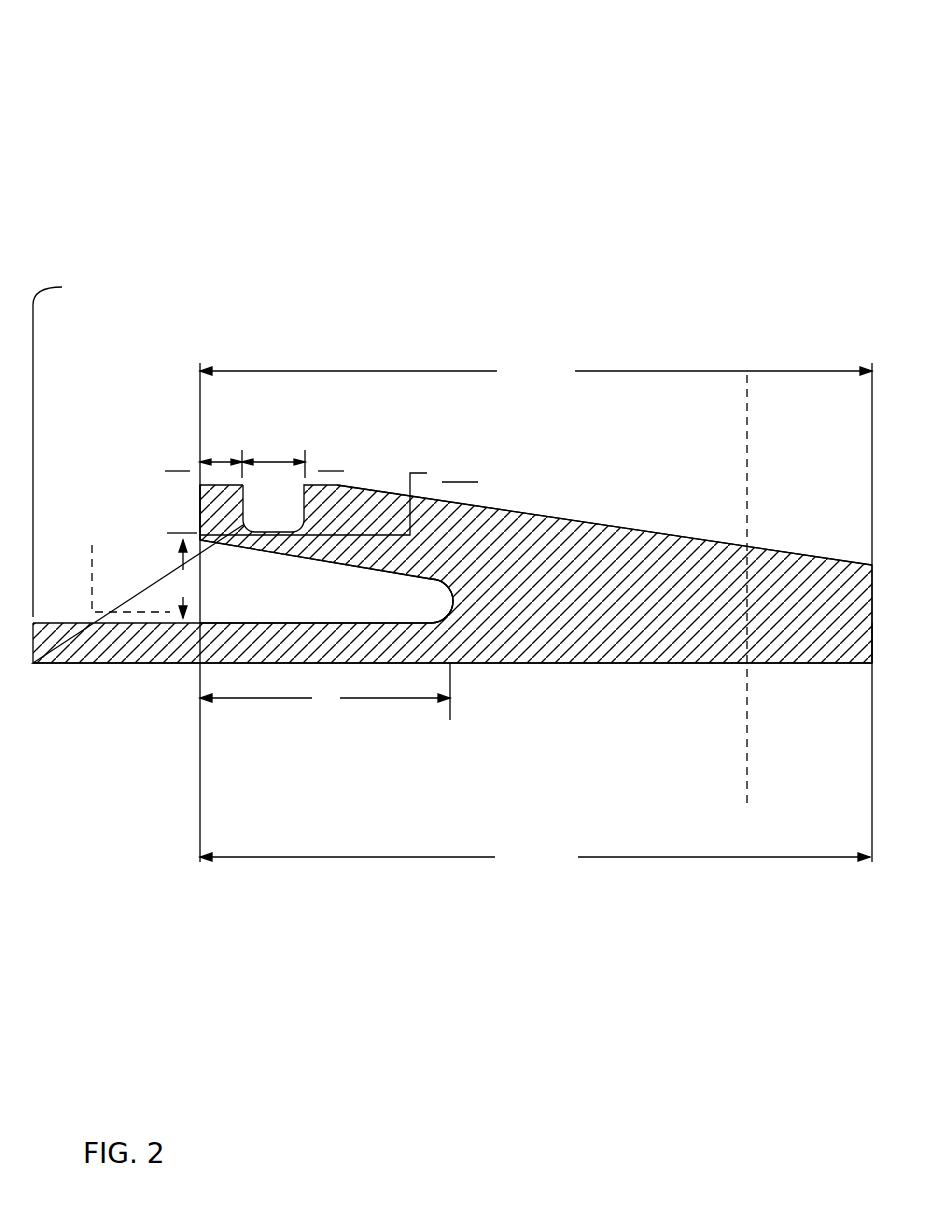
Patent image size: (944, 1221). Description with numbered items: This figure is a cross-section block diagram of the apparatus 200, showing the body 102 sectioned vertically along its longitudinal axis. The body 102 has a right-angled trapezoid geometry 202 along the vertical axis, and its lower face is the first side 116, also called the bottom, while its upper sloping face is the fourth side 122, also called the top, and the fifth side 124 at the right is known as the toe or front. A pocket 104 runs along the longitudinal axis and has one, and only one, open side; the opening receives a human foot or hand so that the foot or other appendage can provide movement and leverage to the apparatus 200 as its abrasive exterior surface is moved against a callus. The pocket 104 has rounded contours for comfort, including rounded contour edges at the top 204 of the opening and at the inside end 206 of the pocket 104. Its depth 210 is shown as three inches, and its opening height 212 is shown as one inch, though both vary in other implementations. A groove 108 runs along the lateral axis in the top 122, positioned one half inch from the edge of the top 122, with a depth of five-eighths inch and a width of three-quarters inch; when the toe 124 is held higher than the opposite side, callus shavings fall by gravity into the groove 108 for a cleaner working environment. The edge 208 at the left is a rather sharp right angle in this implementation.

The apparatus 200 is at (826, 35).
The body 102 is at (648, 550).
The fourth side 122 is at (535, 513).
The groove 108 is at (285, 500).
The pocket 104 is at (341, 607).
The inside end 206 is at (421, 607).
The first side 116 is at (598, 665).
The fifth side 124 is at (867, 650).
The edge 208 is at (69, 447).
The right-angled trapezoid geometry 202 is at (153, 600).
The top of the opening 204 is at (198, 537).
The opening height 212 is at (180, 565).
The depth 210 is at (287, 700).